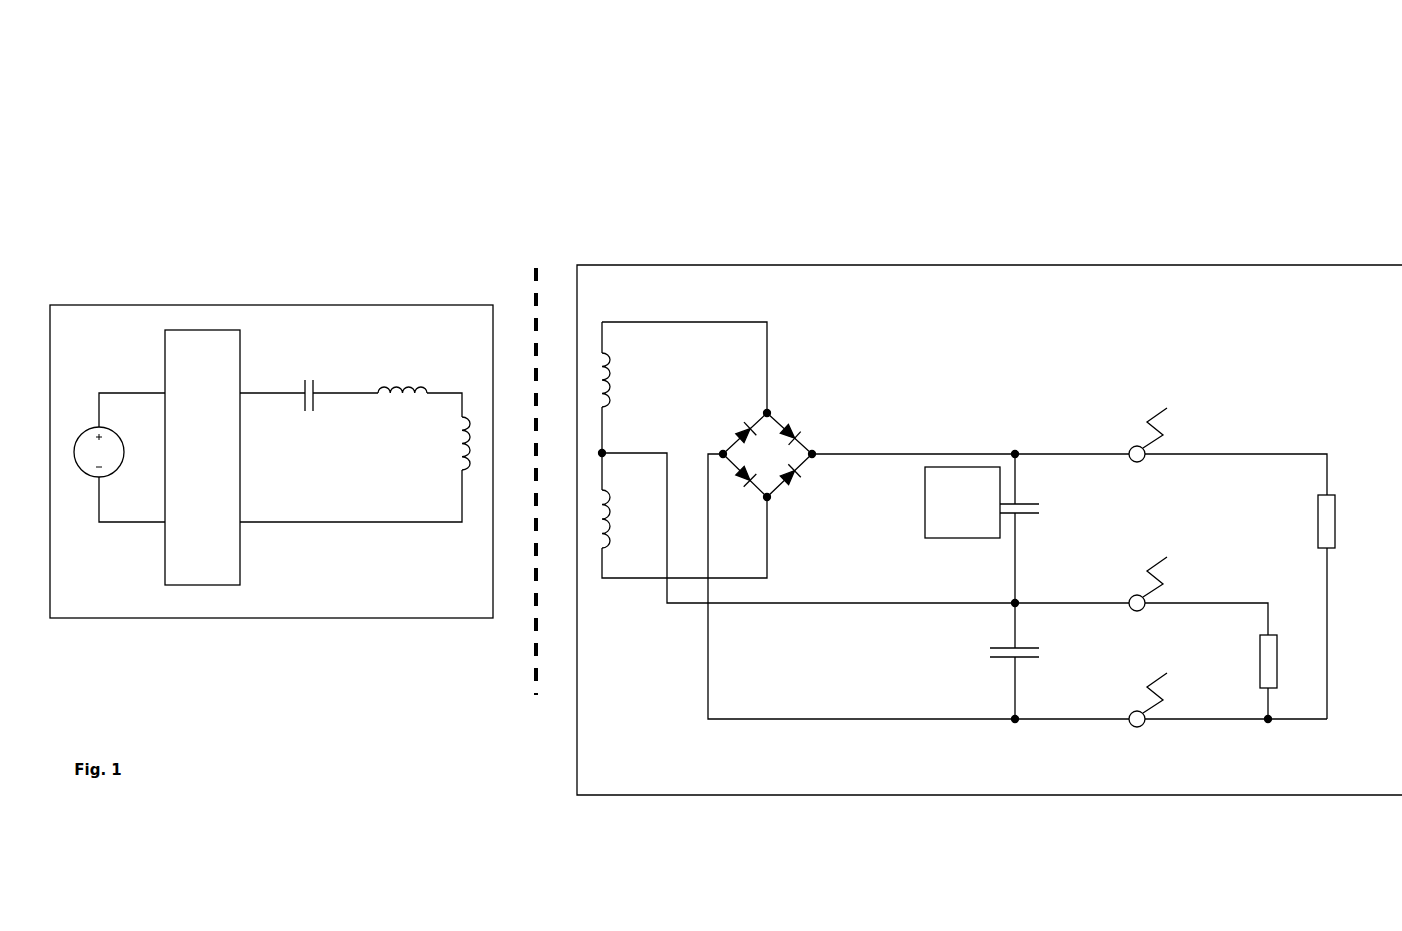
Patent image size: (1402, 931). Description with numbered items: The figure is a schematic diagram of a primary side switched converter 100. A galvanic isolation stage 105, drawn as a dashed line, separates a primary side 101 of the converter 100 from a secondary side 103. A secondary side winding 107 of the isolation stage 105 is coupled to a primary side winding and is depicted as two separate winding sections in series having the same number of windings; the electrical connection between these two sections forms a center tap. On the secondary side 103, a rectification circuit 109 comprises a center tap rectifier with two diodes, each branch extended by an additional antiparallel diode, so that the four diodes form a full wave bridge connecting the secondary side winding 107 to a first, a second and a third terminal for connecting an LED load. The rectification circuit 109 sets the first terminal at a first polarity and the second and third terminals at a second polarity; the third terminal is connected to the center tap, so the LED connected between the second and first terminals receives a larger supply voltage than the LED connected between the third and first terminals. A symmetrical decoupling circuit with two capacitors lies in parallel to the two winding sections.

The primary side switched converter 100 is at (1265, 137).
The primary side 101 is at (162, 306).
The secondary side 103 is at (785, 266).
The galvanic isolation stage 105 is at (540, 262).
The secondary side winding 107 is at (598, 406).
The rectification circuit 109 is at (792, 403).